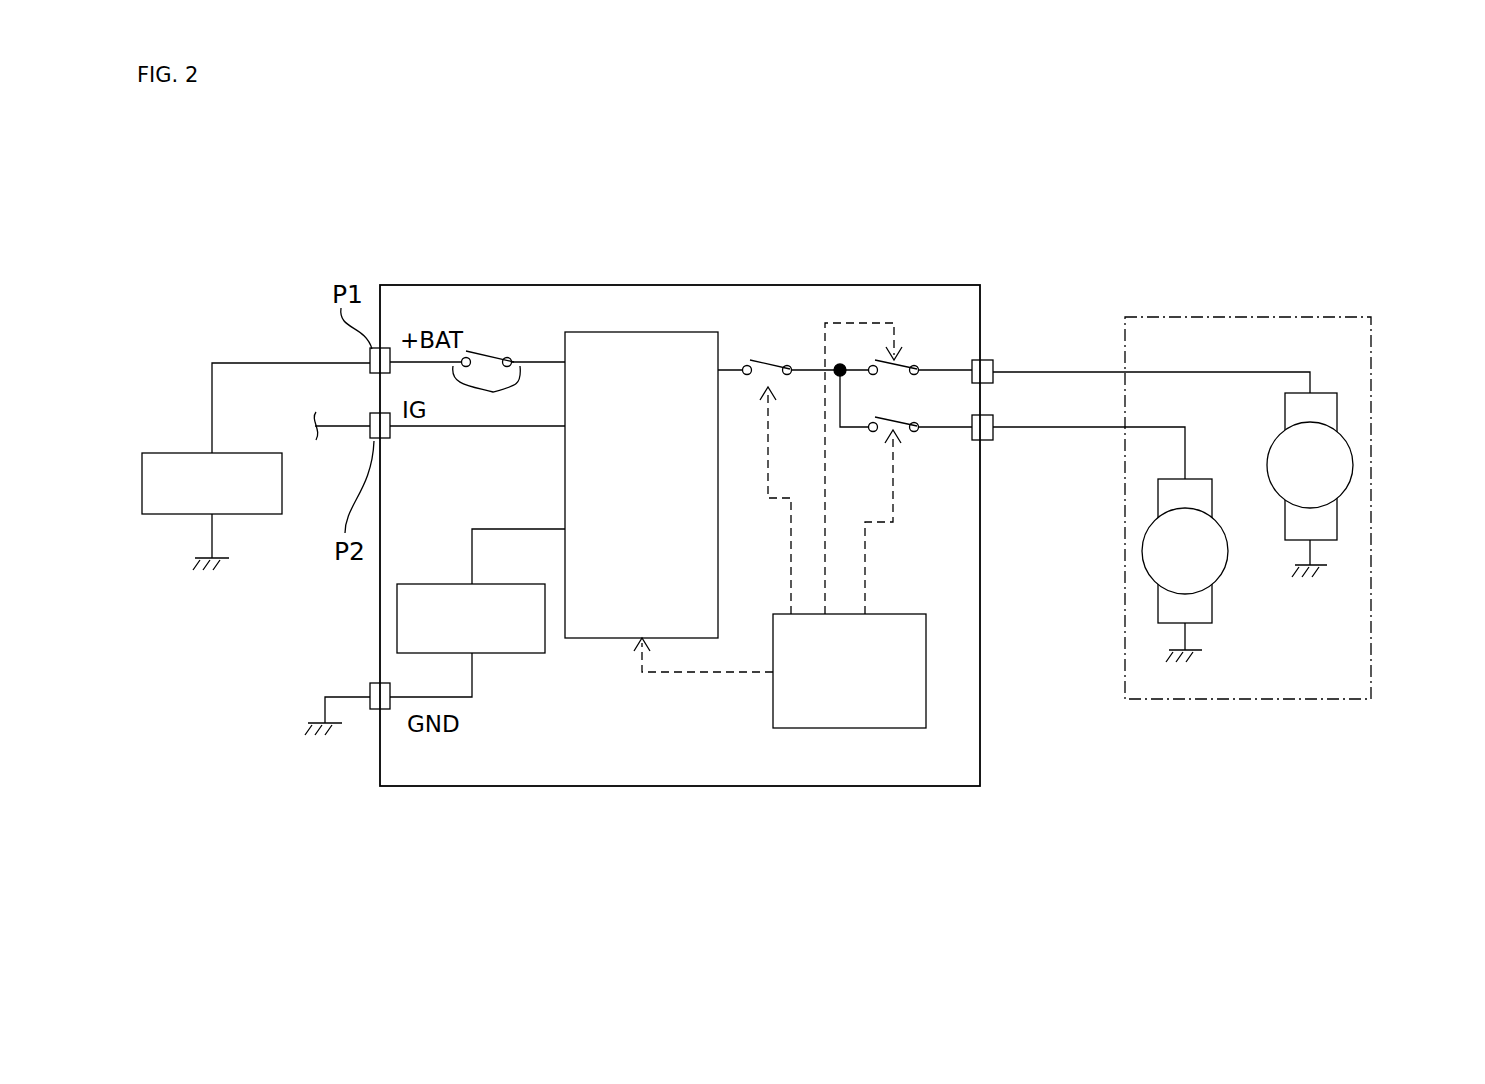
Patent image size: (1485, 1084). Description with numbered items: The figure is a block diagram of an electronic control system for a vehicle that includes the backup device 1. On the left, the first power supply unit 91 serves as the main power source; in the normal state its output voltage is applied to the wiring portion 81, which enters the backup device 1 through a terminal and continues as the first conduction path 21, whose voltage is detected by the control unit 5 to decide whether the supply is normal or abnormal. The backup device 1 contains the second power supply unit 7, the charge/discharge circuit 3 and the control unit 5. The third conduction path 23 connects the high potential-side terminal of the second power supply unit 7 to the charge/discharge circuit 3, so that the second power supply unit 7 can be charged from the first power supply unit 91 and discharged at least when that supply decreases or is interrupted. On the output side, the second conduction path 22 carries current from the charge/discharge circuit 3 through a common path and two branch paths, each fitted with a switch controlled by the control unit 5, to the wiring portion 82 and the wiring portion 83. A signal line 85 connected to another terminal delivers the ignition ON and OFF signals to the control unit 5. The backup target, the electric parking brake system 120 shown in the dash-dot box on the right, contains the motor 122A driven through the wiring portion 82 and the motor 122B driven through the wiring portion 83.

The backup device 1 is at (742, 285).
The charge/discharge circuit 3 is at (625, 332).
The control unit 5 is at (773, 700).
The second power supply unit 7 is at (428, 583).
The first conduction path 21 is at (477, 387).
The second conduction path 22 is at (728, 368).
The third conduction path 23 is at (492, 527).
The wiring portion 81 is at (257, 362).
The wiring portion 82 is at (1035, 372).
The wiring portion 83 is at (1047, 430).
The signal line 85 is at (333, 430).
The first power supply unit 91 is at (168, 453).
The electric parking brake system 120 is at (1247, 317).
The motor 122A is at (1343, 433).
The motor 122B is at (1150, 575).